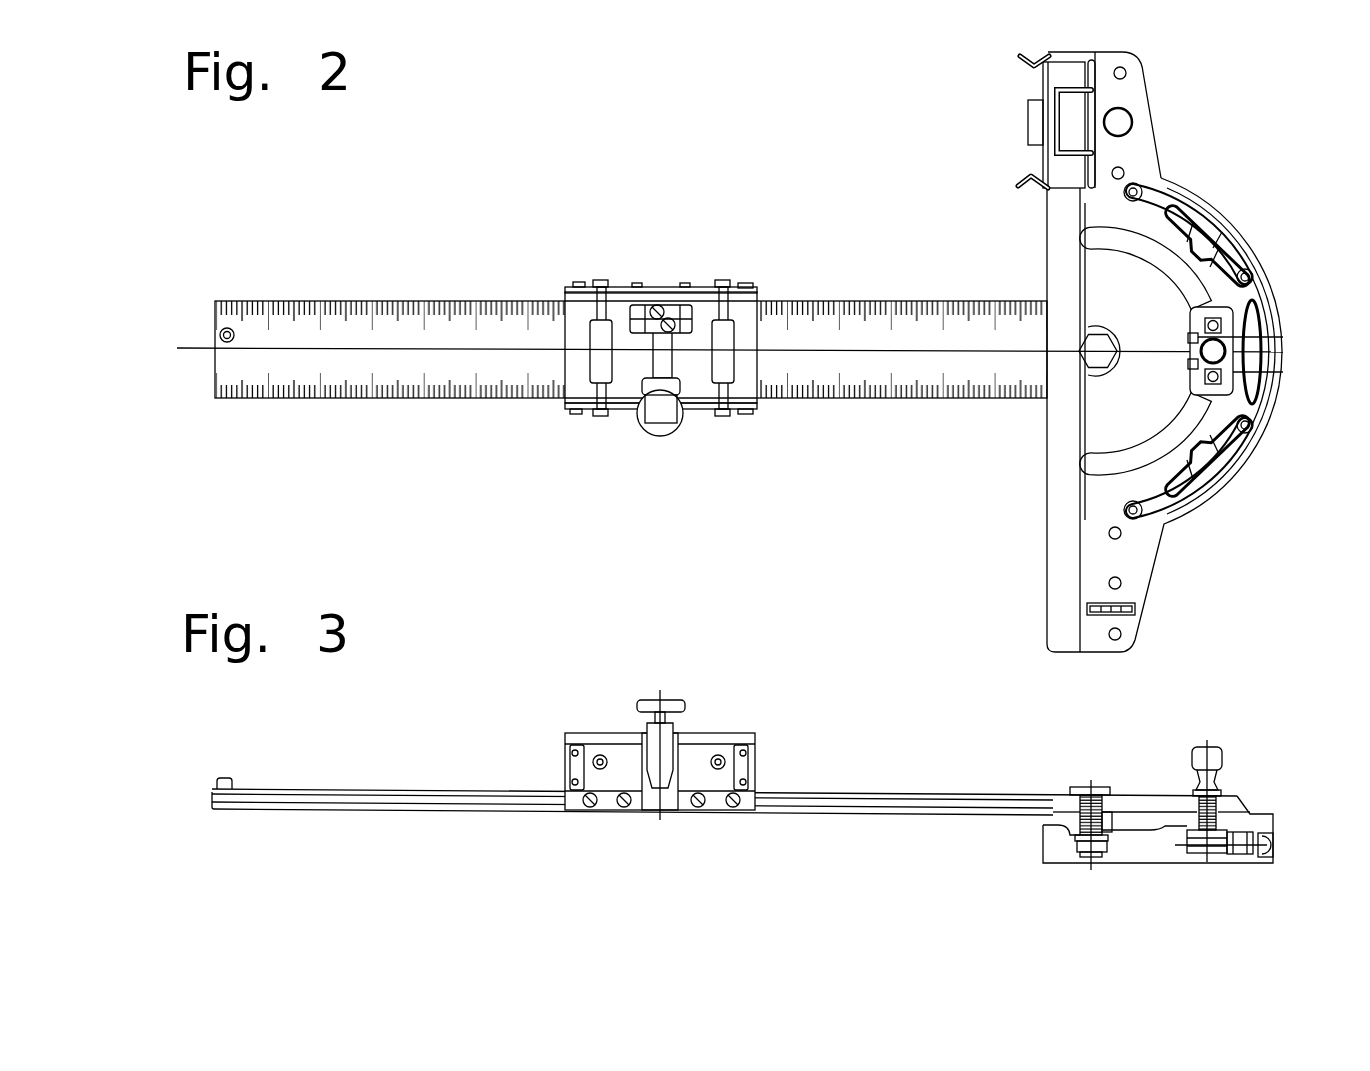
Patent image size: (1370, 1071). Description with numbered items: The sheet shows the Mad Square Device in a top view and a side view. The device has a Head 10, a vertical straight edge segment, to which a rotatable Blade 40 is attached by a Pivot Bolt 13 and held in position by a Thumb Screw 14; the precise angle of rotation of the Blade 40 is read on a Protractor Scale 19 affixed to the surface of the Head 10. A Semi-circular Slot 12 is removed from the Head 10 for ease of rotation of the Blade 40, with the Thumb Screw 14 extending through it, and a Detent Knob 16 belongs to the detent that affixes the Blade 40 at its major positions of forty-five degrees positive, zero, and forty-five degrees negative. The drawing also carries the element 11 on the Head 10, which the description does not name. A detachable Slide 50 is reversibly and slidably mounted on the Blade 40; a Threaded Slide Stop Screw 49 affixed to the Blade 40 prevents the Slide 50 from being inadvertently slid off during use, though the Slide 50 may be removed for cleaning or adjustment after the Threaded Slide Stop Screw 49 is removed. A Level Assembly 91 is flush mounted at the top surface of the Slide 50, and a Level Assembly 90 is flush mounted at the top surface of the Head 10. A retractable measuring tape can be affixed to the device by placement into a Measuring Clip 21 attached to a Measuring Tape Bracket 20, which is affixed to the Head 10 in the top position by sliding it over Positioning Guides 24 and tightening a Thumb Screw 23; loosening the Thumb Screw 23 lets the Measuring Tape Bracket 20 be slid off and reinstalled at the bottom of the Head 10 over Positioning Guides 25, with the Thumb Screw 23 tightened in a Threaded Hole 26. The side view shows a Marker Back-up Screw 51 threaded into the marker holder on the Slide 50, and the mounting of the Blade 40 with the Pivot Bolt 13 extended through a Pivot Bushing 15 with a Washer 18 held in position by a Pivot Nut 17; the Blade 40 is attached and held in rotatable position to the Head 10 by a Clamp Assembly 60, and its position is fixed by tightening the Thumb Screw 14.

In FIG. 2, the Head 10 is at (1042, 482).
In FIG. 2, the protractor plate 11 is at (1058, 507).
In FIG. 2, the Semi-circular Slot 12 is at (1136, 472).
In FIG. 2, the Pivot Bolt 13 is at (1121, 332).
In FIG. 3, the Pivot Bolt 13 is at (1080, 784).
In FIG. 2, the Thumb Screw 14 is at (1238, 346).
In FIG. 3, the Thumb Screw 14 is at (1235, 755).
In FIG. 3, the Pivot Bushing 15 is at (1073, 806).
In FIG. 3, the Detent Knob 16 is at (1240, 834).
In FIG. 3, the Pivot Nut 17 is at (1070, 851).
In FIG. 3, the Washer 18 is at (1113, 811).
In FIG. 2, the Protractor Scale 19 is at (1164, 187).
In FIG. 2, the Measuring Tape Bracket 20 is at (1106, 68).
In FIG. 2, the Measuring Clip 21 is at (1034, 52).
In FIG. 2, the Thumb Screw 23 is at (1135, 109).
In FIG. 2, the Positioning Guides 24 is at (1126, 169).
In FIG. 2, the Positioning Guides 25 is at (1124, 539).
In FIG. 2, the Threaded Hole 26 is at (1106, 586).
In FIG. 2, the Blade 40 is at (935, 404).
In FIG. 3, the Blade 40 is at (724, 796).
In FIG. 2, the Threaded Slide Stop Screw 49 is at (232, 328).
In FIG. 2, the Slide 50 is at (711, 363).
In FIG. 3, the Slide 50 is at (686, 736).
In FIG. 3, the Marker Back-up Screw 51 is at (676, 697).
In FIG. 3, the Clamp Assembly 60 is at (1222, 828).
In FIG. 2, the Level Assembly 90 is at (1140, 610).
In FIG. 2, the Level Assembly 91 is at (671, 304).